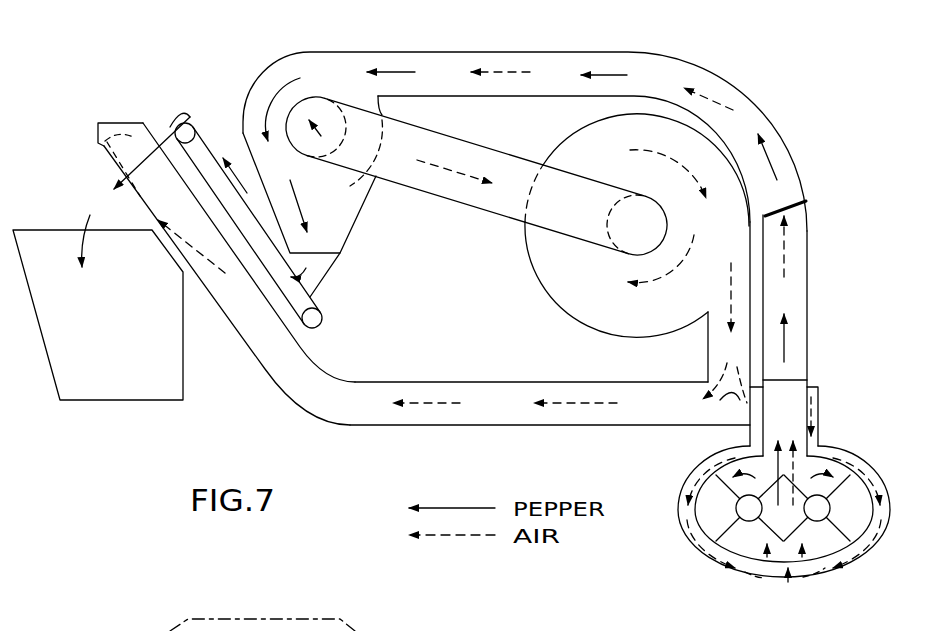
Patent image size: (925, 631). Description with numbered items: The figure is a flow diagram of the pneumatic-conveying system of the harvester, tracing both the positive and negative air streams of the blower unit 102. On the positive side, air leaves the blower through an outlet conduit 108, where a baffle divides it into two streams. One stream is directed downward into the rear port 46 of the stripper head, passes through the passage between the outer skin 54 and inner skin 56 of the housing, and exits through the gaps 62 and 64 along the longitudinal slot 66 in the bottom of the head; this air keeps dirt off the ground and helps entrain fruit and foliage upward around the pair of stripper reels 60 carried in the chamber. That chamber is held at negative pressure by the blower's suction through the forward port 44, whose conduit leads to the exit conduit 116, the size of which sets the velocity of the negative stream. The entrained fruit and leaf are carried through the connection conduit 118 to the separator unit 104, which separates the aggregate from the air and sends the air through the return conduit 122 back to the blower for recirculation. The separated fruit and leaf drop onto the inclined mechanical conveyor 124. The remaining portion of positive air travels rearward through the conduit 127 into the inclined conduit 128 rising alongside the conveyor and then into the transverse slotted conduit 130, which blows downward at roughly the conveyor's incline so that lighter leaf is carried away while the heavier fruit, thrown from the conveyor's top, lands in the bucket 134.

The blower unit 102 is at (583, 282).
The separator unit 104 is at (320, 177).
The outlet conduit 108 is at (722, 345).
The exit conduit 116 is at (801, 283).
The connection conduit 118 is at (574, 66).
The return conduit 122 is at (527, 200).
The inclined mechanical conveyor 124 is at (200, 136).
The conduit 127 is at (420, 390).
The inclined conduit 128 is at (265, 347).
The slotted conduit 130 is at (122, 123).
The bucket 134 is at (53, 228).
The forward port 44 is at (807, 380).
The rear port 46 is at (748, 422).
The outer skin 54 is at (687, 541).
The inner skin 56 is at (697, 492).
The stripper reels 60 is at (736, 508).
The gap 62 is at (763, 575).
The gap 64 is at (813, 572).
The longitudinal slot 66 is at (775, 581).